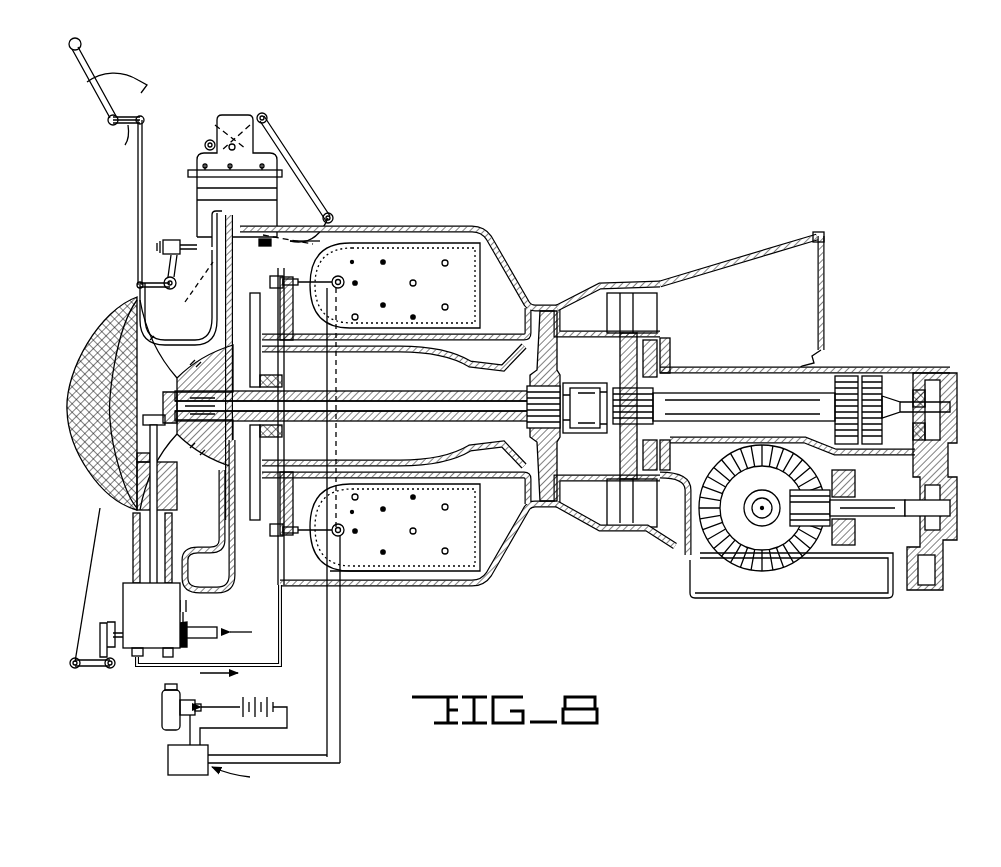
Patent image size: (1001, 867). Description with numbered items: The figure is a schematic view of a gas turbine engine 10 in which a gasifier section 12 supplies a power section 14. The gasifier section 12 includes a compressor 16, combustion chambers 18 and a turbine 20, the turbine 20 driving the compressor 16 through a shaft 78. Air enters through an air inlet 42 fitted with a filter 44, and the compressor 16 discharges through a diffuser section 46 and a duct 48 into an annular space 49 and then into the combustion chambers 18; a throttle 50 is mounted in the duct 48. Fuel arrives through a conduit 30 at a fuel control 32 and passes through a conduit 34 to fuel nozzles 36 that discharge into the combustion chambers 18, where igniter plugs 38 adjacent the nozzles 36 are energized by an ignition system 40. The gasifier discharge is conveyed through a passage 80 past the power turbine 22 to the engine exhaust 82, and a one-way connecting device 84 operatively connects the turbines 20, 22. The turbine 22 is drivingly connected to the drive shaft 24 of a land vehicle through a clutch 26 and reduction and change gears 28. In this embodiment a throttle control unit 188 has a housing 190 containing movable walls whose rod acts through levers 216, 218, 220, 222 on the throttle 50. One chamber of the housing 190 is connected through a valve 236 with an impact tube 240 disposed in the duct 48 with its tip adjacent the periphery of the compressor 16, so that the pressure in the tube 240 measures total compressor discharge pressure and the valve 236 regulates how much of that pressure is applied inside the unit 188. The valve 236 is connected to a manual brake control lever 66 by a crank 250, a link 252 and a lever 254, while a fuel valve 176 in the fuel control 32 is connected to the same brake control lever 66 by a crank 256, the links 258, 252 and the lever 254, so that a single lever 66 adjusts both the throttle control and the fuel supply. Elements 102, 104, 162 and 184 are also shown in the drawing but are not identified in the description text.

The gas turbine engine 10 is at (553, 220).
The gasifier section 12 is at (448, 226).
The power section 14 is at (872, 362).
The compressor 16 is at (192, 348).
The combustion chambers 18 is at (395, 407).
The turbine 20 is at (546, 311).
The turbine 22 is at (628, 292).
The drive shaft 24 is at (762, 512).
The clutch 26 is at (885, 380).
The reduction and change gears 28 is at (950, 460).
The conduit 30 is at (205, 627).
The fuel control 32 is at (172, 635).
The conduit 34 is at (268, 667).
The fuel nozzles 36 is at (345, 290).
The igniter plugs 38 is at (342, 278).
The ignition system 40 is at (248, 728).
The air inlet 42 is at (155, 405).
The filter 44 is at (80, 323).
The diffuser section 46 is at (215, 313).
The duct 48 is at (270, 232).
The annular space 49 is at (380, 580).
The throttle 50 is at (300, 240).
The manual brake control lever 66 is at (82, 44).
The shaft 78 is at (340, 375).
The passage 80 is at (600, 300).
The engine exhaust 82 is at (742, 301).
The one-way connecting device 84 is at (587, 433).
The shaft 102 is at (428, 398).
The wall 104 is at (262, 363).
The valve 162 is at (150, 415).
The fuel valve 176 is at (120, 623).
The solenoid 184 is at (160, 720).
The throttle control unit 188 is at (264, 156).
The housing 190 is at (196, 190).
The lever 216 is at (277, 126).
The lever 218 is at (213, 125).
The lever 220 is at (312, 172).
The lever 222 is at (330, 205).
The valve 236 is at (183, 242).
The impact tube 240 is at (186, 292).
The crank 250 is at (158, 280).
The link 252 is at (136, 178).
The lever 254 is at (114, 116).
The crank 256 is at (97, 668).
The link 258 is at (90, 527).